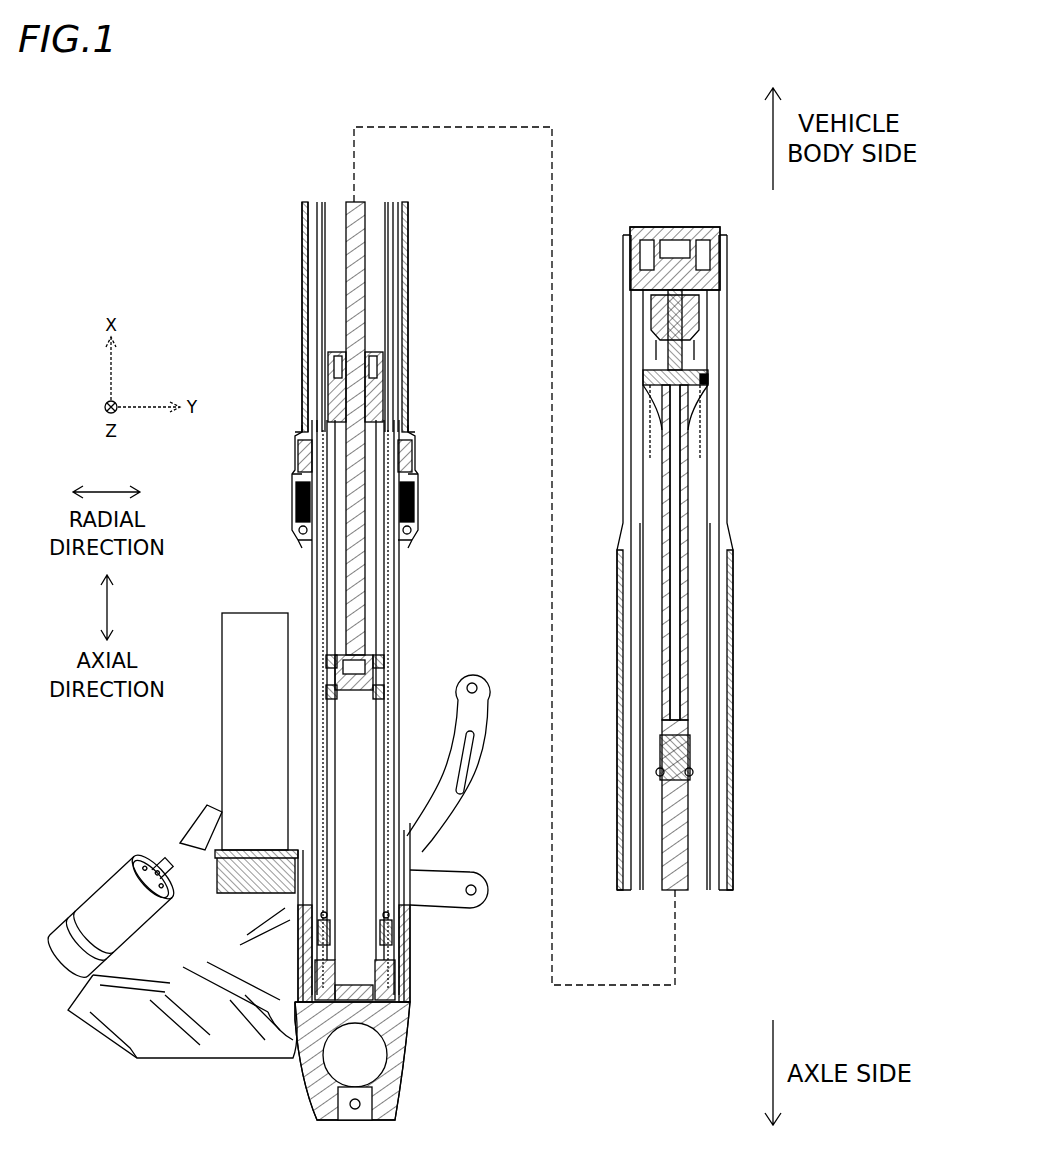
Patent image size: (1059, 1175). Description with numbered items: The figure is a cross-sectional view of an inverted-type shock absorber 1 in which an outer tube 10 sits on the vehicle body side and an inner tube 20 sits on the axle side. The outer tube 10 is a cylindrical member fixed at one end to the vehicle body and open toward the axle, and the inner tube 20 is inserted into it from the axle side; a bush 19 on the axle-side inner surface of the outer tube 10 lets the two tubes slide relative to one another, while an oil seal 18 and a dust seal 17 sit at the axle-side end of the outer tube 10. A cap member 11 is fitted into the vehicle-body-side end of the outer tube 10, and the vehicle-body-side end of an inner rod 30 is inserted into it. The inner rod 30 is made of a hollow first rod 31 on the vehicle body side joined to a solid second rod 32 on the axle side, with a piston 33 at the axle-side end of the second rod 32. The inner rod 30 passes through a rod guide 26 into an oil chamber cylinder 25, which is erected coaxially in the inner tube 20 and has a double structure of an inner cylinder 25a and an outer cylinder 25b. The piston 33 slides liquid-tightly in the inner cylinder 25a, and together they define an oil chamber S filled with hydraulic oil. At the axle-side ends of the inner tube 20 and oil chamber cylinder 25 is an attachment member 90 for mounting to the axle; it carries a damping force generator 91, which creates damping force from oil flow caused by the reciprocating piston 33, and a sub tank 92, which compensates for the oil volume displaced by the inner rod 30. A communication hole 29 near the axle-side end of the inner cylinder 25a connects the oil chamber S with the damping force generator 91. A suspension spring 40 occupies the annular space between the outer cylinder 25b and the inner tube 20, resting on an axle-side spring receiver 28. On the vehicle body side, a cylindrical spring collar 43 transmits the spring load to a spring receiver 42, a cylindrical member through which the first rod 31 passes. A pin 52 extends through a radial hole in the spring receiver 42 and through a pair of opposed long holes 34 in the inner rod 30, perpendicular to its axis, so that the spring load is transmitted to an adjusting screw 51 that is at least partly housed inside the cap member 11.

The shock absorber 1 is at (677, 138).
The outer tube 10 is at (727, 828).
The cap member 11 is at (736, 224).
The dust seal 17 is at (417, 540).
The oil seal 18 is at (415, 500).
The bush 19 is at (410, 470).
The inner tube 20 is at (400, 588).
The oil chamber cylinder 25 is at (508, 620).
The inner cylinder 25a is at (375, 695).
The outer cylinder 25b is at (378, 662).
The rod guide 26 is at (380, 380).
The spring receiver 28 is at (393, 930).
The communication hole 29 is at (400, 985).
The inner rod 30 is at (776, 670).
The first rod 31 is at (685, 698).
The second rod 32 is at (688, 795).
The piston 33 is at (335, 668).
The long hole 34 is at (668, 370).
The suspension spring 40 is at (393, 626).
The spring receiver 42 is at (695, 367).
The spring collar 43 is at (325, 268).
The adjusting screw 51 is at (672, 318).
The pin 52 is at (705, 380).
The attachment member 90 is at (442, 1102).
The damping force generator 91 is at (150, 855).
The sub tank 92 is at (225, 660).
The oil chamber S is at (360, 745).